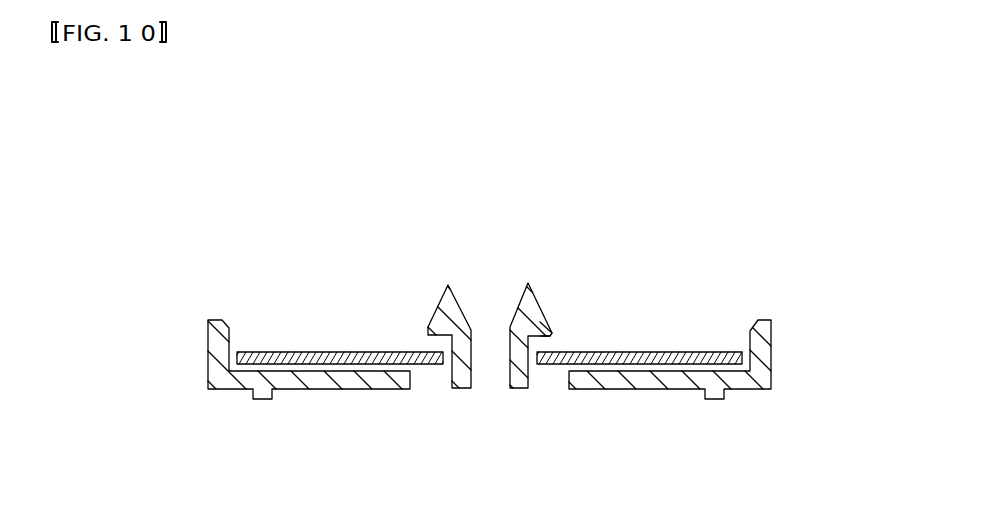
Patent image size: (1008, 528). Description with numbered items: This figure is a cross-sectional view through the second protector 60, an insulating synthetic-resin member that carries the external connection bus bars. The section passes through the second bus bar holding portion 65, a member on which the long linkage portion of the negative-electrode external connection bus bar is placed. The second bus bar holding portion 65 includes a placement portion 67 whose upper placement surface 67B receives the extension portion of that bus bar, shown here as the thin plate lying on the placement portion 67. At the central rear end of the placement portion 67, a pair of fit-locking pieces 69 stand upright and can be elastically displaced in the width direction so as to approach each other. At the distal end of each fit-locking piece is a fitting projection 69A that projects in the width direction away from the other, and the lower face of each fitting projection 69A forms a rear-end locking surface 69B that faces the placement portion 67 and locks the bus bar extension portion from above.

The second protector 60 is at (788, 353).
The placement portion 67 is at (616, 383).
The second bus bar holding portion 65 is at (670, 388).
The placement surface 67B is at (334, 362).
The fit-locking pieces 69 is at (515, 308).
The fitting projection 69A is at (539, 316).
The rear-end locking surface 69B is at (547, 337).